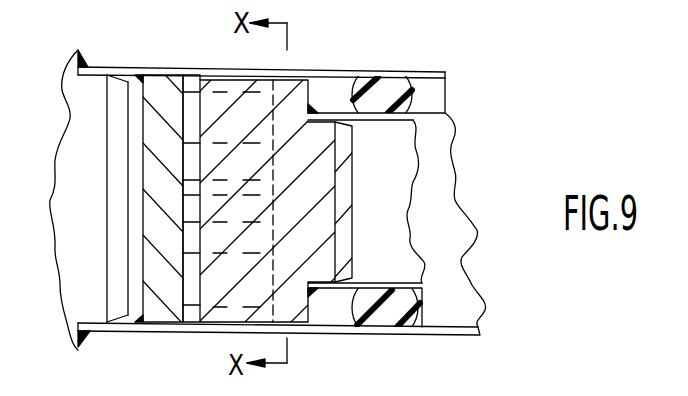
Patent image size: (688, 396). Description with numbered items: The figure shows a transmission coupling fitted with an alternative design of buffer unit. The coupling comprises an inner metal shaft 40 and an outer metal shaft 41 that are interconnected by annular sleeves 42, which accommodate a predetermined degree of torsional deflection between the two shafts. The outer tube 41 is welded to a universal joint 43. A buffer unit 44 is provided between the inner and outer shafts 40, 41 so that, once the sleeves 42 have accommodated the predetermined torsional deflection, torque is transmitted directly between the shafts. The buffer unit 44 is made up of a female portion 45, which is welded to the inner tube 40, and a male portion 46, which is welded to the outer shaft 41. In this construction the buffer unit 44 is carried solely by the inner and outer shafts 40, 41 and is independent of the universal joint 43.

The inner metal shaft 40 is at (443, 113).
The outer metal shaft 41 is at (337, 72).
The annular sleeve 42 is at (392, 87).
The universal joint 43 is at (80, 90).
The buffer unit 44 is at (208, 78).
The female portion 45 is at (297, 97).
The male portion 46 is at (160, 98).